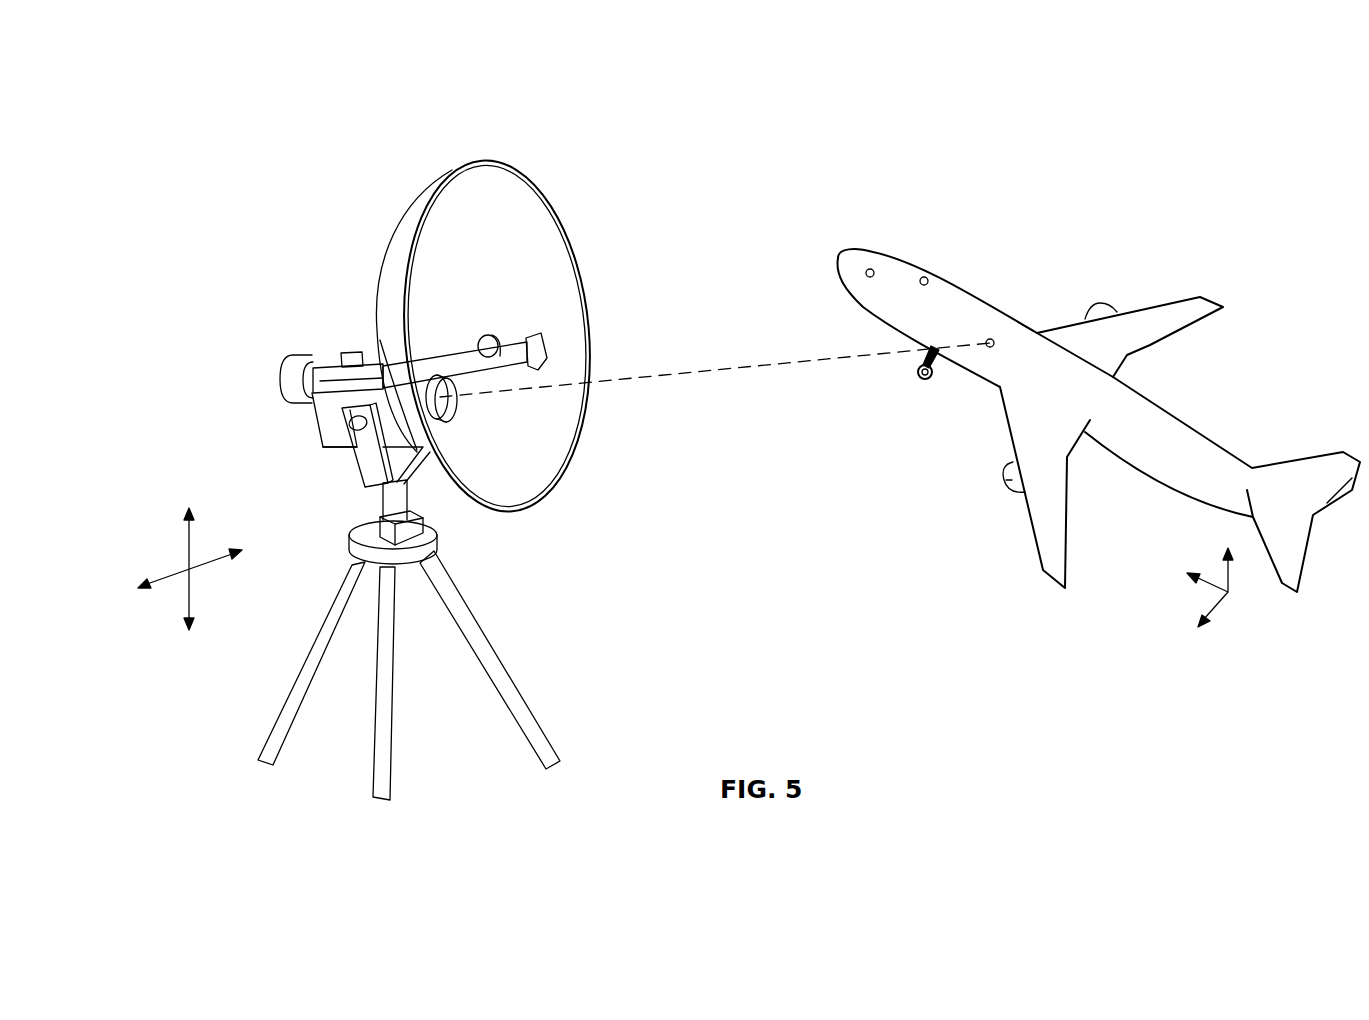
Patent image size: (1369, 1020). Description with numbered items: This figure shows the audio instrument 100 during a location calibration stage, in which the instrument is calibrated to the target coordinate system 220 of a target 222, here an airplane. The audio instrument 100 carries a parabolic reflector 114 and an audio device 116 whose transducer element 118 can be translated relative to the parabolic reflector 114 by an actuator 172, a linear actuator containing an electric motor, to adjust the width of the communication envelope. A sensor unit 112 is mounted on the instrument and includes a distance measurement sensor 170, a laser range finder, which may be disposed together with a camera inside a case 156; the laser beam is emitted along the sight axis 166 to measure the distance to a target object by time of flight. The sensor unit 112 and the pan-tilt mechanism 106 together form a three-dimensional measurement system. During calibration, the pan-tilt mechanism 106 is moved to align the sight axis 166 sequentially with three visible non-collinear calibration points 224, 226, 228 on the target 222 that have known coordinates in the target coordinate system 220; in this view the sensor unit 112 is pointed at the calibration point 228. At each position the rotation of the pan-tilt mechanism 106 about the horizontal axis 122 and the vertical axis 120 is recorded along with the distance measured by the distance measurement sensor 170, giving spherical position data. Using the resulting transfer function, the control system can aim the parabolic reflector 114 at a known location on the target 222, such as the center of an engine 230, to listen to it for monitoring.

The audio instrument 100 is at (265, 228).
The pan-tilt mechanism 106 is at (398, 478).
The sensor unit 112 is at (375, 393).
The parabolic reflector 114 is at (413, 222).
The audio device 116 is at (514, 337).
The transducer element 118 is at (487, 335).
The vertical axis 120 is at (188, 548).
The horizontal axis 122 is at (210, 562).
The case 156 is at (355, 395).
The sight axis 166 is at (670, 362).
The distance measurement sensor 170 is at (325, 432).
The actuator 172 is at (343, 357).
The target coordinate system 220 is at (1228, 592).
The target 222 is at (1224, 368).
The calibration point 224 is at (870, 270).
The calibration point 226 is at (923, 278).
The calibration point 228 is at (990, 340).
The engine 230 is at (1005, 480).